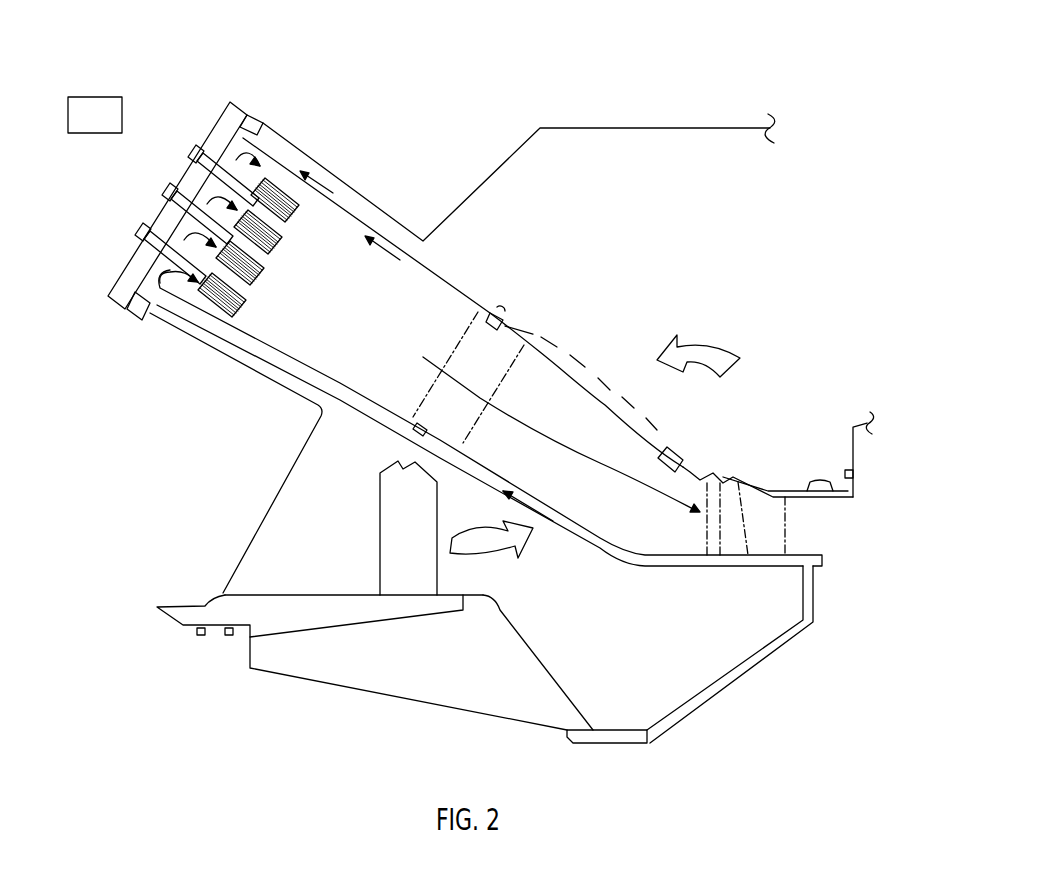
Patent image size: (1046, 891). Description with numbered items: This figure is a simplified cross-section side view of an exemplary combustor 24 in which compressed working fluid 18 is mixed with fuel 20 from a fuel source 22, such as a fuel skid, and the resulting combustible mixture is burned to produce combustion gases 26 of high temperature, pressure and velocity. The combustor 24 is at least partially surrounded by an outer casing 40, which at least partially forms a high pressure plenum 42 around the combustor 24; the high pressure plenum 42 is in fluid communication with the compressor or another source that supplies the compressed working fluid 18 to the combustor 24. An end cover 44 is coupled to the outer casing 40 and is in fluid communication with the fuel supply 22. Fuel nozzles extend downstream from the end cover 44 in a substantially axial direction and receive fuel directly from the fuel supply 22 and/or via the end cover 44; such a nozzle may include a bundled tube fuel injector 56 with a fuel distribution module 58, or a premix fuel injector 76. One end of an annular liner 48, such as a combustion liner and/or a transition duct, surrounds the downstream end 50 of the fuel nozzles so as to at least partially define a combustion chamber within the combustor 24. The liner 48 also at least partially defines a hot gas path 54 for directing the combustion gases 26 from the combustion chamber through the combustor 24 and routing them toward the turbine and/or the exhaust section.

The compressed working fluid 18 is at (236, 146).
The fuel 20 is at (115, 190).
The fuel source 22 is at (152, 212).
The combustor 24 is at (360, 98).
The combustion gases 26 is at (566, 433).
The outer casing 40 is at (486, 184).
The high pressure plenum 42 is at (689, 190).
The end cover 44 is at (228, 118).
The annular liner 48 is at (430, 280).
The downstream end of the fuel nozzles 50 is at (273, 257).
The hot gas path 54 is at (449, 373).
The bundled tube fuel injector 56 is at (280, 260).
The fuel distribution module 58 is at (374, 302).
The premix fuel injector 76 is at (280, 260).